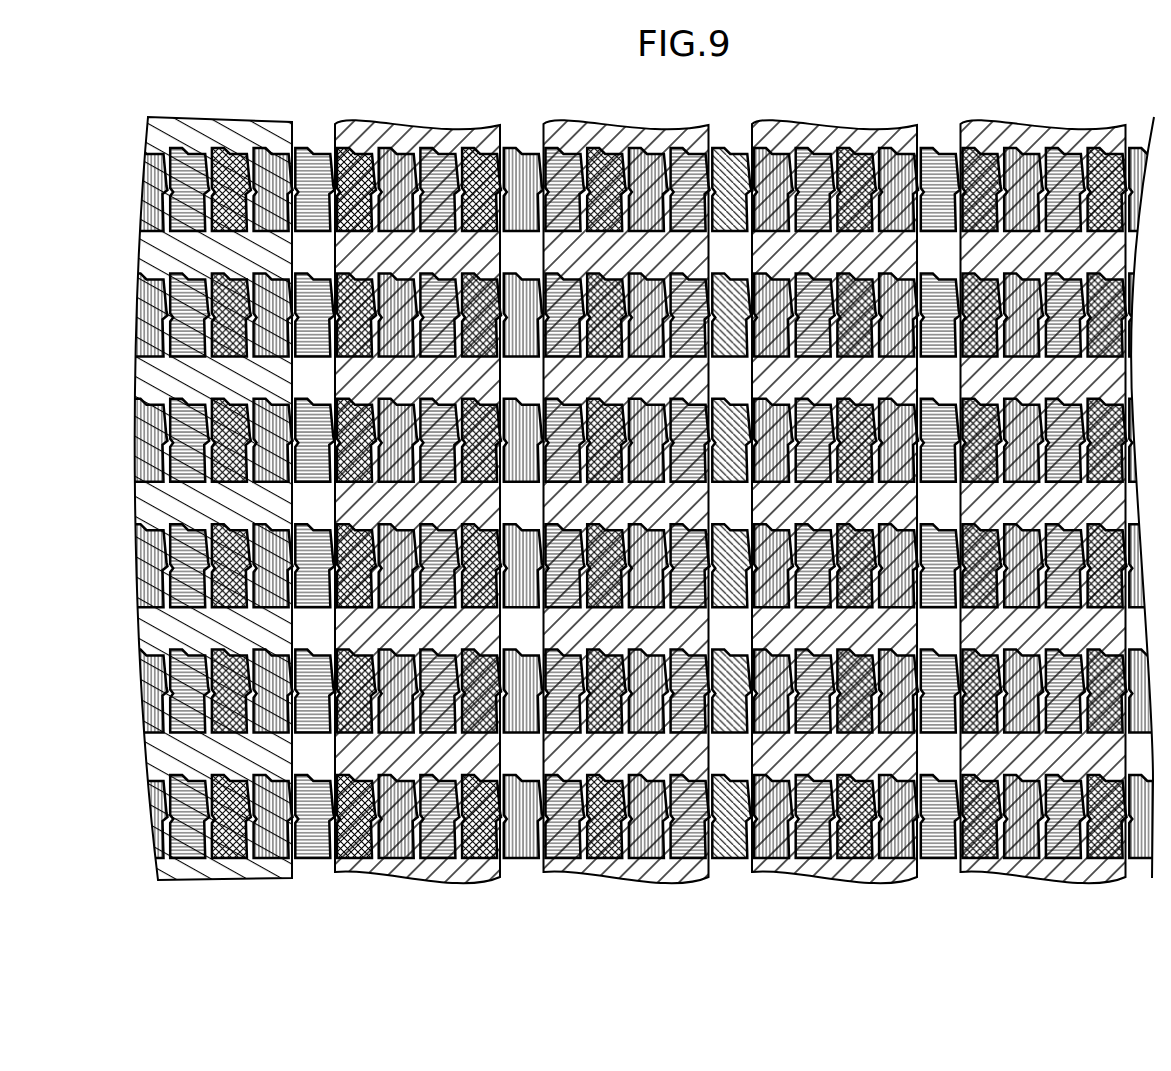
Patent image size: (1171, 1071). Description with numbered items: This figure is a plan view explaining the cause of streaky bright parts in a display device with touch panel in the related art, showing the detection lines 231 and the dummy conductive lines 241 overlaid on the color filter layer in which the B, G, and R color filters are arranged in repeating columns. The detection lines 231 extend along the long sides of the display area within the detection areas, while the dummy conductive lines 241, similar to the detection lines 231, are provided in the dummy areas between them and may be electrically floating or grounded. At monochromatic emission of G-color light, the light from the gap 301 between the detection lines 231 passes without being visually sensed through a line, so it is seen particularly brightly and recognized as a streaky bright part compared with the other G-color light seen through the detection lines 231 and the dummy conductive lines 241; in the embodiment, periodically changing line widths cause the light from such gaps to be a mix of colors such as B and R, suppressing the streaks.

The detection lines 231 is at (1077, 143).
The dummy conductive lines 241 is at (148, 373).
The gap 301 is at (735, 112).
The B-color filter B is at (187, 150).
The G-color filter G is at (228, 150).
The R-color filter R is at (270, 150).